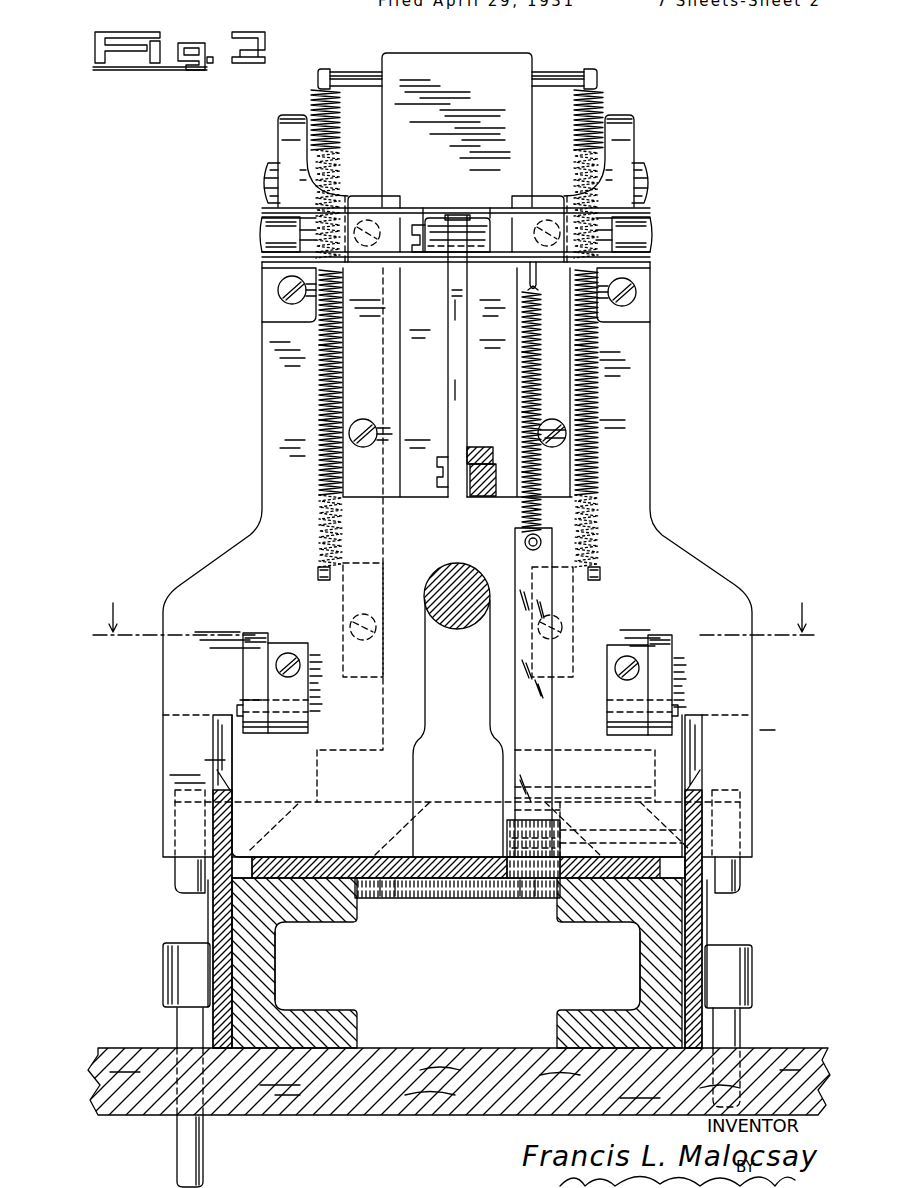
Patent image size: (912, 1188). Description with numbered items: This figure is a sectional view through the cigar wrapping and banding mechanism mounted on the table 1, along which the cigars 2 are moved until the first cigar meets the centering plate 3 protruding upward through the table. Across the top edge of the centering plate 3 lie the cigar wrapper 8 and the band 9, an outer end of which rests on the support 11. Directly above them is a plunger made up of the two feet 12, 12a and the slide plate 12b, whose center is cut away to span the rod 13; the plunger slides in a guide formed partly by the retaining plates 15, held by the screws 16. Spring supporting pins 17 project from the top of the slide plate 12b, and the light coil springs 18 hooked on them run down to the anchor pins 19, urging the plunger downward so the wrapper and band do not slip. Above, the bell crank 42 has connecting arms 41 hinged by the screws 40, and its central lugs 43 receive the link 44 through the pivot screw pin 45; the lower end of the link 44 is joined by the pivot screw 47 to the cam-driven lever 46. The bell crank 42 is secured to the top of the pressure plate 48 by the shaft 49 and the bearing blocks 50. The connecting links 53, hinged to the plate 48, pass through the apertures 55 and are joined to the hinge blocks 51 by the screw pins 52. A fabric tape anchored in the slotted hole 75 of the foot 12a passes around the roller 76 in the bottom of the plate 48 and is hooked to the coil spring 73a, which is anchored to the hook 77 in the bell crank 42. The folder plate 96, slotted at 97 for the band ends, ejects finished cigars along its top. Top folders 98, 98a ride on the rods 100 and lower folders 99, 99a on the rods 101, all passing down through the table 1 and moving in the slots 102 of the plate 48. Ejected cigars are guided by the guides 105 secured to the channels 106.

The table 1 is at (342, 1112).
The cigars 2 is at (660, 810).
The centering plate 3 is at (454, 608).
The cigar wrapper 8 is at (468, 812).
The band 9 is at (560, 805).
The support 11 is at (437, 898).
The plunger foot 12 is at (368, 750).
The plunger foot 12a is at (560, 750).
The slide plate 12b is at (440, 56).
The rod 13 is at (462, 632).
The retaining plates 15 is at (400, 415).
The screws 16 is at (362, 420).
The spring supporting pins 17 is at (348, 73).
The light coil springs 18 is at (316, 100).
The anchor pins 19 is at (318, 575).
The screws 40 is at (262, 188).
The connecting arms 41 is at (280, 135).
The bell crank 42 is at (410, 205).
The lugs 43 is at (478, 218).
The link 44 is at (448, 315).
The pivot screw pin 45 is at (420, 262).
The lever 46 is at (480, 445).
The pivot screw 47 is at (437, 462).
The plate 48 is at (262, 460).
The shaft 49 is at (262, 235).
The bearing blocks 50 is at (275, 280).
The hinge blocks 51 is at (298, 645).
The screw pins 52 is at (241, 708).
The connecting links 53 is at (255, 665).
The apertures 55 is at (260, 633).
The coil spring 73a is at (540, 330).
The slotted hole 75 is at (525, 786).
The roller 76 is at (520, 833).
The hook 77 is at (528, 280).
The folder plate 96 is at (400, 880).
The slot 97 is at (525, 880).
The top folder 98 is at (222, 745).
The top folder 98a is at (702, 750).
The lower folder 99 is at (208, 945).
The lower folder 99a is at (740, 945).
The rods 100 is at (175, 868).
The rods 101 is at (205, 1160).
The slots 102 is at (213, 716).
The guides 105 is at (210, 897).
The channels 106 is at (280, 970).